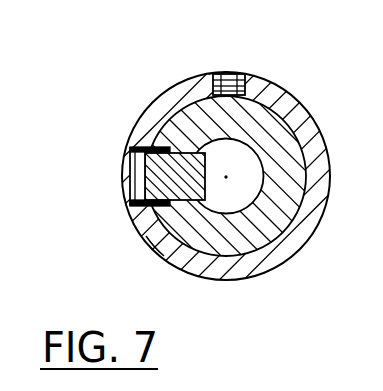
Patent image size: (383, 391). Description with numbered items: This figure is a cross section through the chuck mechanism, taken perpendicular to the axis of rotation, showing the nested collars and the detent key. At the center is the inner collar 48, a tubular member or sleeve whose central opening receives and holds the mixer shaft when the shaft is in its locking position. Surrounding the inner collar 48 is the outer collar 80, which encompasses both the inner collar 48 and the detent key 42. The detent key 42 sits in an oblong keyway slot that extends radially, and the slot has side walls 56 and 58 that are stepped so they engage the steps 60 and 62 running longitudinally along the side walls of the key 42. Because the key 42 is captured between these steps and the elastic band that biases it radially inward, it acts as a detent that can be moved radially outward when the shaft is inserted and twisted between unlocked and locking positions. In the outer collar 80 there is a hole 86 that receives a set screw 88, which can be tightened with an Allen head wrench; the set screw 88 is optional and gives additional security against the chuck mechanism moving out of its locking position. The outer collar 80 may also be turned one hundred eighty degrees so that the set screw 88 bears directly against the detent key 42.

The detent key 42 is at (145, 195).
The inner collar 48 is at (264, 128).
The side wall of keyway slot 56 is at (165, 127).
The side wall of keyway slot 58 is at (148, 235).
The step 60 is at (132, 163).
The step 62 is at (134, 201).
The outer collar 80 is at (283, 245).
The hole 86 is at (247, 79).
The set screw 88 is at (216, 73).